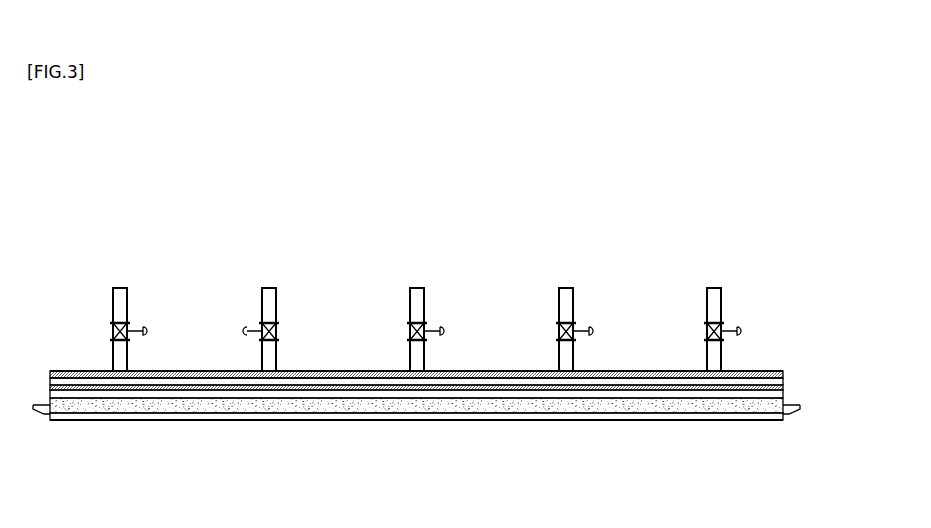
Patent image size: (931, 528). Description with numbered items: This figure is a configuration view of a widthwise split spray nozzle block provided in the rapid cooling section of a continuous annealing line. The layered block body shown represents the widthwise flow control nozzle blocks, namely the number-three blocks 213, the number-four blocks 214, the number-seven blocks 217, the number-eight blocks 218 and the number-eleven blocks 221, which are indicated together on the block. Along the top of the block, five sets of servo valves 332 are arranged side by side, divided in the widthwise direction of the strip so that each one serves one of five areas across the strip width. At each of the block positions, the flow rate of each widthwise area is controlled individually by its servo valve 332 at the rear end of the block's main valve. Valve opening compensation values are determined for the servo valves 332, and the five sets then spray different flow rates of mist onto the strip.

The #3 blocks 213 is at (725, 249).
The #4 blocks 214 is at (430, 267).
The #7 blocks 217 is at (430, 280).
The #8 blocks 218 is at (430, 295).
The #11 blocks 221 is at (421, 317).
The servo valves 332 is at (137, 327).